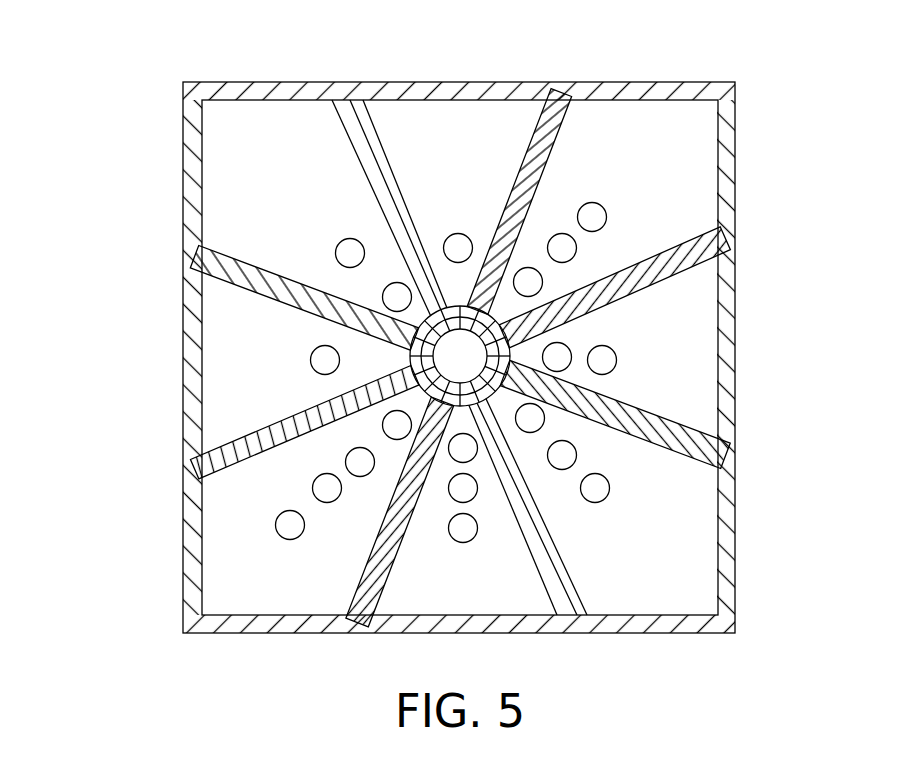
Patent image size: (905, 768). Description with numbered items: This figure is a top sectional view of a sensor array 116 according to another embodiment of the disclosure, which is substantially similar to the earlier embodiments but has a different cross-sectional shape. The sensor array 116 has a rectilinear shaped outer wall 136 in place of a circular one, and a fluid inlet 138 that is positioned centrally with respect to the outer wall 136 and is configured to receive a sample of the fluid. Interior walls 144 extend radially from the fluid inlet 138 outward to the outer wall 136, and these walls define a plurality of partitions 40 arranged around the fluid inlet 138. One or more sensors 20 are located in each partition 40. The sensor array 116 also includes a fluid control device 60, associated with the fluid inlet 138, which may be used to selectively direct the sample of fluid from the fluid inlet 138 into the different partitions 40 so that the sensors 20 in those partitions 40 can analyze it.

The sensor array 116 is at (148, 88).
The partitions 40 is at (302, 118).
The sensors 20 is at (336, 257).
The outer wall 136 is at (215, 260).
The interior walls 144 is at (254, 298).
The fluid inlet 138 is at (474, 352).
The fluid control device 60 is at (507, 374).